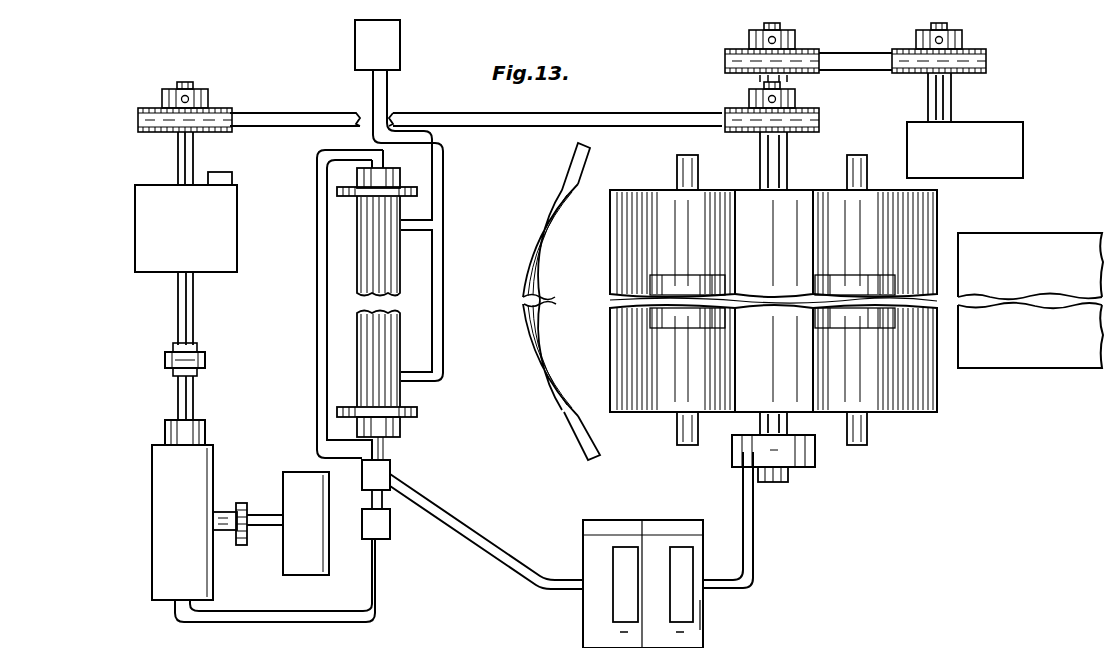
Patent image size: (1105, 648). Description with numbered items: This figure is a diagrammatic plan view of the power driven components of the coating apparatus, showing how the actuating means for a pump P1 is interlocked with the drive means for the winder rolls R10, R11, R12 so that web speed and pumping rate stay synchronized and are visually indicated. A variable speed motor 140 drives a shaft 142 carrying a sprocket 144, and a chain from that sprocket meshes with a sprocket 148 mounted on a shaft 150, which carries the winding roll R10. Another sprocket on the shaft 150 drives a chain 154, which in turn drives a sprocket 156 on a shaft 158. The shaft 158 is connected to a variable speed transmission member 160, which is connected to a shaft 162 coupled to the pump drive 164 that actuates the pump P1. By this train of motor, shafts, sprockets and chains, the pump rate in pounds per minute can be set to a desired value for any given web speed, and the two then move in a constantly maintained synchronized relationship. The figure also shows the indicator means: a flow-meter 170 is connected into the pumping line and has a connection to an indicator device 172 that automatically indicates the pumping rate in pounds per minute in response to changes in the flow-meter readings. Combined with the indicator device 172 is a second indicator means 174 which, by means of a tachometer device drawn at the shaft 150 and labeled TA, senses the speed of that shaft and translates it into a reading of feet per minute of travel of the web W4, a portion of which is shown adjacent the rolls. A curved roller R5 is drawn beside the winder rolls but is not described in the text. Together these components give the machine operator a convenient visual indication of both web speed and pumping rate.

The variable speed motor 140 is at (1010, 144).
The shaft 142 is at (946, 101).
The sprocket 144 is at (968, 56).
The sprocket 148 is at (805, 56).
The shaft 150 is at (784, 152).
The chain 154 is at (504, 120).
The sprocket 156 is at (207, 106).
The shaft 158 is at (184, 153).
The variable speed transmission member 160 is at (146, 212).
The shaft 162 is at (184, 305).
The pump drive 164 is at (185, 390).
The flow-meter 170 is at (380, 474).
The indicator device 172 is at (616, 520).
The second indicator means 174 is at (702, 620).
The pump P1 is at (166, 510).
The curved roller R5 is at (548, 394).
The winding roll R10 is at (750, 418).
The winder roll R11 is at (668, 420).
The winder roll R12 is at (889, 401).
The tachometer TA is at (792, 462).
The web W4 is at (1055, 350).